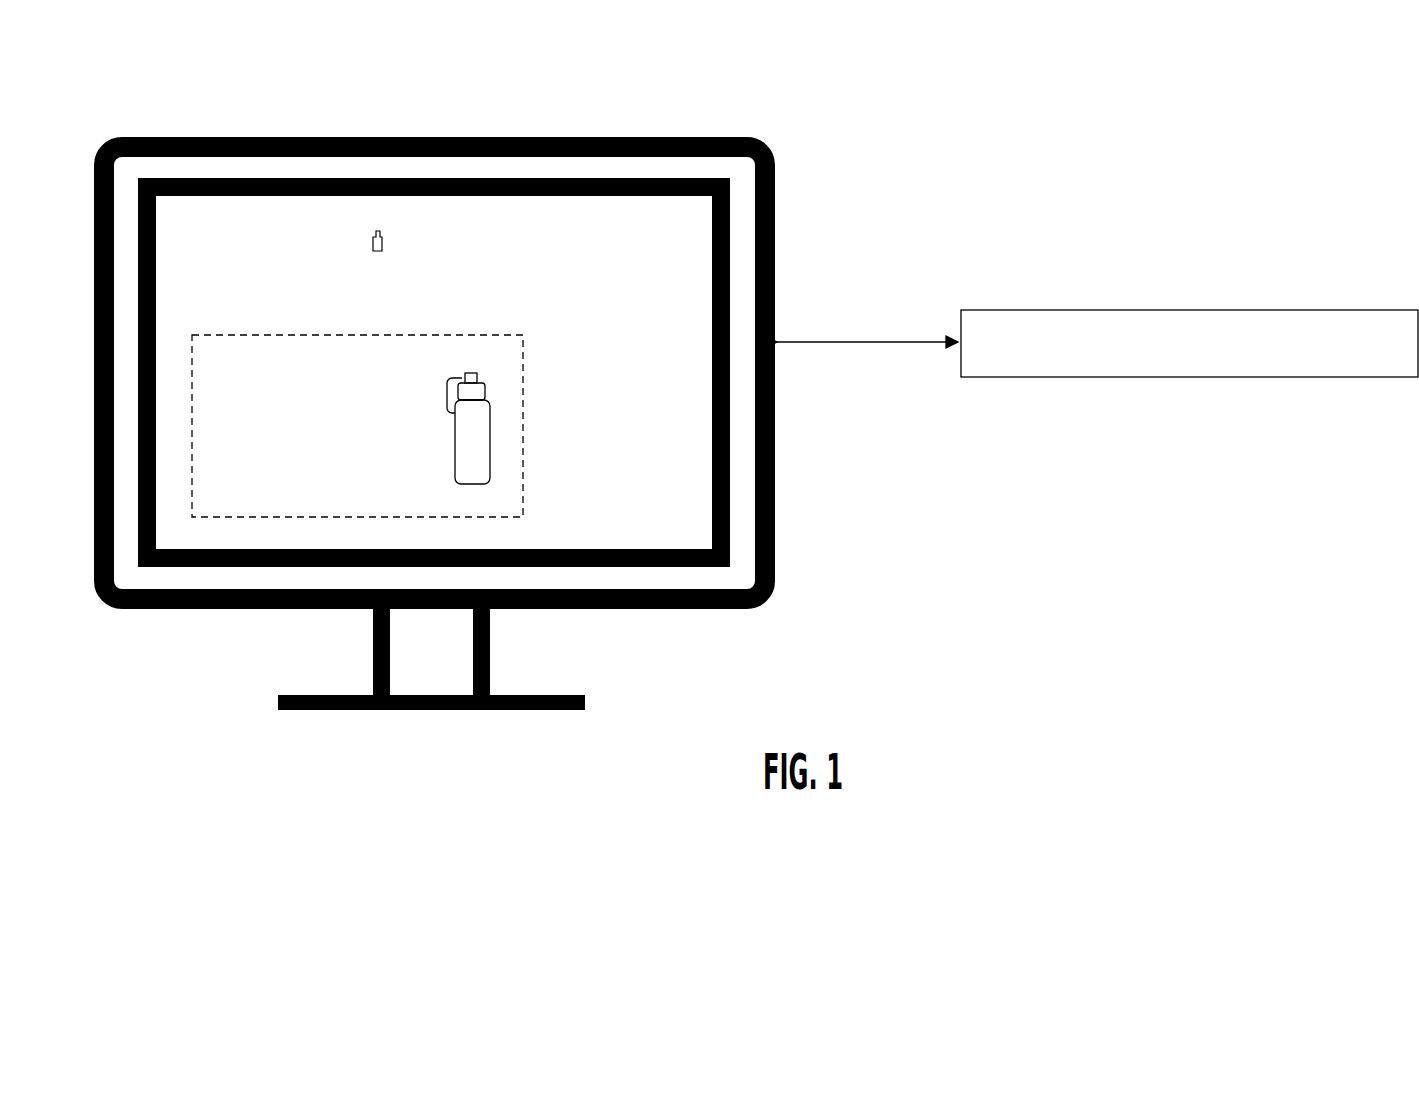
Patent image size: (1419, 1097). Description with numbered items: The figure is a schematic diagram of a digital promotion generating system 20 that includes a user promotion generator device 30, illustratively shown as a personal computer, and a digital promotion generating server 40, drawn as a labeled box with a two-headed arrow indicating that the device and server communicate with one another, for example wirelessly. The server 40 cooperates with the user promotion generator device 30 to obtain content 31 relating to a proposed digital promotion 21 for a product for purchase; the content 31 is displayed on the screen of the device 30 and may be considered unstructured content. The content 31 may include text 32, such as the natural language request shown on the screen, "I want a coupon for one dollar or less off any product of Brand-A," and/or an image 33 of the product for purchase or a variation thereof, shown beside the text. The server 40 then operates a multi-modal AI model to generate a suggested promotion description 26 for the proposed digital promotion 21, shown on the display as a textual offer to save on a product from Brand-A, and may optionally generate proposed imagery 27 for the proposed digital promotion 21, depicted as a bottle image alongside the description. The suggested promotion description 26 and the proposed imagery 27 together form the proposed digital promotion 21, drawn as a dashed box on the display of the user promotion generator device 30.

The digital promotion generating system 20 is at (427, 772).
The proposed digital promotion 21 is at (192, 428).
The suggested promotion description 26 is at (304, 443).
The proposed imagery 27 is at (486, 487).
The user promotion generator device 30 is at (277, 630).
The content 31 is at (645, 234).
The text 32 is at (427, 198).
The image 33 is at (385, 250).
The digital promotion generating server 40 is at (1150, 377).